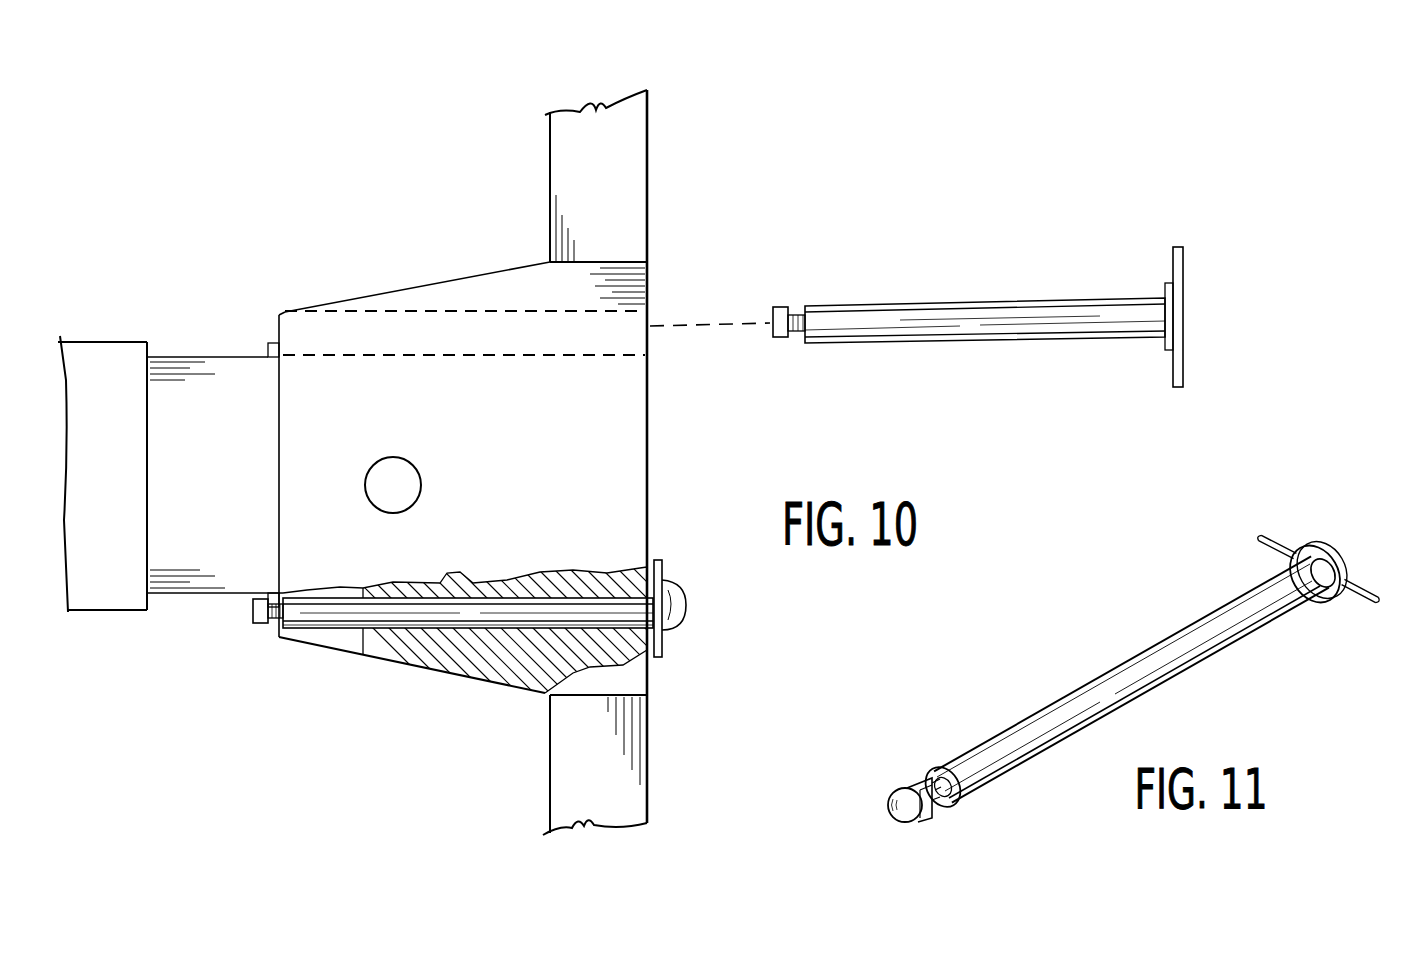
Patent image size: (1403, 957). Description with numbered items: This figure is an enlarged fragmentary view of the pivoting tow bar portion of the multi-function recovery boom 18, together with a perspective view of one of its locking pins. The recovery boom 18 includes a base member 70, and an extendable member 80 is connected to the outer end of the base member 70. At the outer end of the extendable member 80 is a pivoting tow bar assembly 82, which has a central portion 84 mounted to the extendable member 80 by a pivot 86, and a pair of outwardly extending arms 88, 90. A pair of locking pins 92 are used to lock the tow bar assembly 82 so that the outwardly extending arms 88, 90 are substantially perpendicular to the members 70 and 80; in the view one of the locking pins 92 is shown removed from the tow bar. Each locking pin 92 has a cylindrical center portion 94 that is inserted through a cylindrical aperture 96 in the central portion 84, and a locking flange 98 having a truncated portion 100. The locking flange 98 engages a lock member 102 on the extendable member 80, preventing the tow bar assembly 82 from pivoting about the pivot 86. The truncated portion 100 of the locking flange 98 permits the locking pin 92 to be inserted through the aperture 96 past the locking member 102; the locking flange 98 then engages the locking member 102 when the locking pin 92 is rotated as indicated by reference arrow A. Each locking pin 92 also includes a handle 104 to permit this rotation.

In FIG. 10, the multi-function recovery boom 18 is at (190, 597).
In FIG. 10, the base member 70 is at (108, 613).
In FIG. 10, the extendable member 80 is at (188, 352).
In FIG. 10, the tow bar assembly 82 is at (652, 462).
In FIG. 10, the central portion 84 is at (648, 400).
In FIG. 10, the pivot 86 is at (410, 508).
In FIG. 10, the outwardly extending arm 88 is at (648, 148).
In FIG. 10, the outwardly extending arm 90 is at (648, 781).
In FIG. 10, the locking pin 92 is at (680, 590).
In FIG. 11, the locking pin 92 is at (1130, 680).
In FIG. 10, the cylindrical center portion 94 is at (994, 343).
In FIG. 11, the cylindrical center portion 94 is at (1095, 670).
In FIG. 10, the cylindrical aperture 96 is at (450, 310).
In FIG. 10, the locking flange 98 is at (776, 306).
In FIG. 11, the locking flange 98 is at (902, 787).
In FIG. 10, the truncated portion 100 is at (782, 338).
In FIG. 11, the truncated portion 100 is at (932, 818).
In FIG. 10, the lock member 102 is at (269, 343).
In FIG. 11, the handle 104 is at (1280, 538).
In FIG. 10, the reference arrow A is at (686, 612).